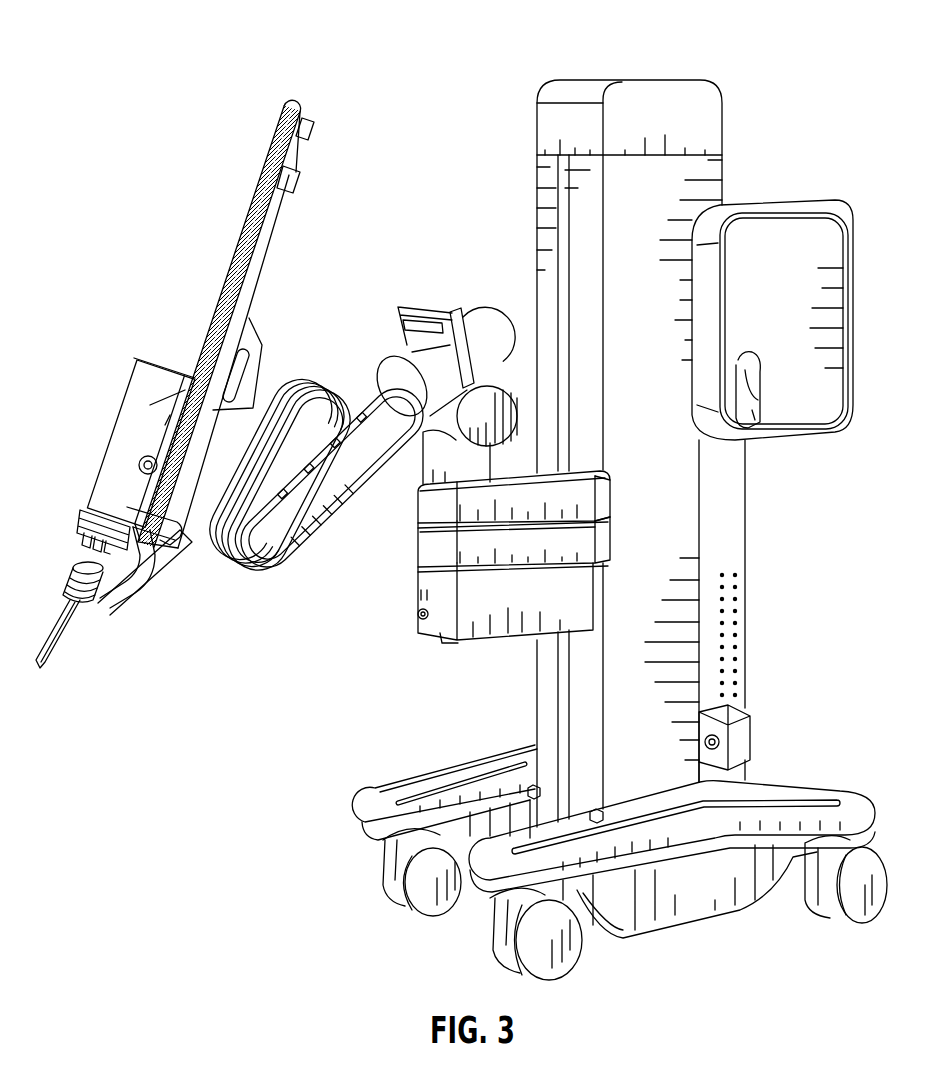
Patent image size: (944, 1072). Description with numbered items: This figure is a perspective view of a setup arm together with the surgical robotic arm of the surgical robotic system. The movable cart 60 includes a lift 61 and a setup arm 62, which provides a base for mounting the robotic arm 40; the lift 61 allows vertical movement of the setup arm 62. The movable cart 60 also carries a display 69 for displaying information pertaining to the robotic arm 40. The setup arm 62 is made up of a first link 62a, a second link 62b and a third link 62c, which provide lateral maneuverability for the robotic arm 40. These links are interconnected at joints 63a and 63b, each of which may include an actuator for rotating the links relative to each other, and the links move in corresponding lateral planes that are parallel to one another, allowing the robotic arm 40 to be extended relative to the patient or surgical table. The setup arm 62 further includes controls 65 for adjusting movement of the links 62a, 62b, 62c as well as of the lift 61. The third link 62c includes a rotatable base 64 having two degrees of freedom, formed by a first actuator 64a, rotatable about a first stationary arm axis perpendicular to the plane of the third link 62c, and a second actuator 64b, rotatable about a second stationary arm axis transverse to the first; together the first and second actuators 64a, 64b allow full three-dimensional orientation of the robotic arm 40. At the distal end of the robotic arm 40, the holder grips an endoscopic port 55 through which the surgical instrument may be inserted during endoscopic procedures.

The robotic arm 40 is at (338, 385).
The endoscopic port 55 is at (63, 640).
The movable cart 60 is at (648, 80).
The lift 61 is at (562, 257).
The setup arm 62 is at (458, 640).
The first link 62a is at (535, 608).
The second link 62b is at (415, 568).
The third link 62c is at (412, 540).
The joint 63a is at (417, 604).
The joint 63b is at (612, 498).
The rotatable base 64 is at (522, 325).
The first actuator 64a is at (478, 318).
The second actuator 64b is at (420, 506).
The controls 65 is at (405, 318).
The display 69 is at (435, 312).